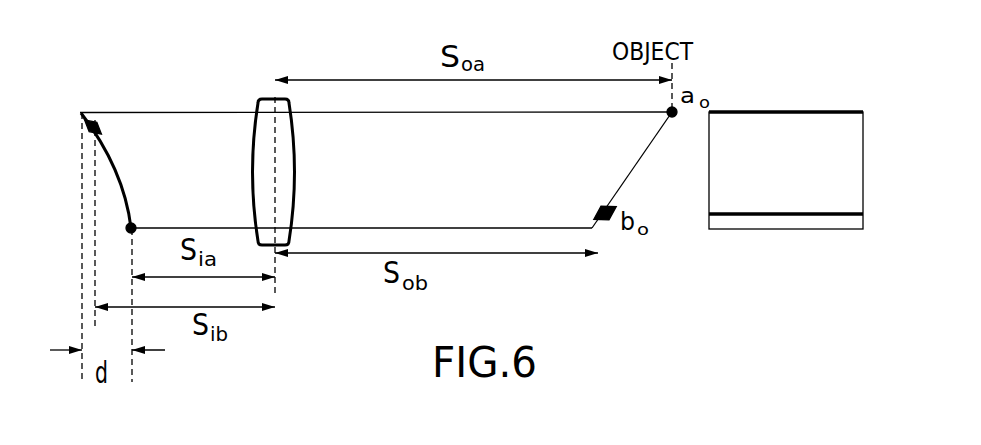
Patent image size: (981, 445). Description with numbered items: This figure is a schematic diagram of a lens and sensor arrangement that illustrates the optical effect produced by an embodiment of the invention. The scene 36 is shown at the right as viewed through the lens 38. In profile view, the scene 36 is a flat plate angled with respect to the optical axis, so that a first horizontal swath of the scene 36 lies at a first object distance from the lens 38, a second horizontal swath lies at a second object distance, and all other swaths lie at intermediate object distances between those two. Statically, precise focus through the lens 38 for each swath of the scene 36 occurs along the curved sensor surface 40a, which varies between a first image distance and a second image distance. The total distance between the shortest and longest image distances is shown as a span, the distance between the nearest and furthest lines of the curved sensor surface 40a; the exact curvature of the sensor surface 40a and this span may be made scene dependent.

The curved sensor surface 40a is at (115, 157).
The lens 38 is at (270, 98).
The scene 36 is at (834, 111).